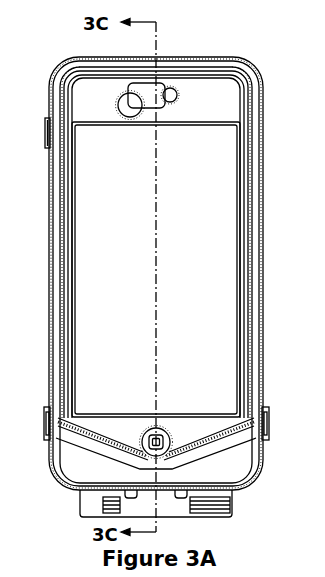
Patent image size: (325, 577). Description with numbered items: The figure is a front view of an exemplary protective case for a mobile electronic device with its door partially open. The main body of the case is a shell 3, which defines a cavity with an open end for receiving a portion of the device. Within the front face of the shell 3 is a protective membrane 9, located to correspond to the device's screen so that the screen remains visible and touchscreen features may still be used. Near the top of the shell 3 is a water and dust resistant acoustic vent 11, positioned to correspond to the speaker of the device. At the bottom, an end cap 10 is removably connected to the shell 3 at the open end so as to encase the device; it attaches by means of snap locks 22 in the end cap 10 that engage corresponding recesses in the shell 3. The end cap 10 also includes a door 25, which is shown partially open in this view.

The shell 3 is at (263, 218).
The protective membrane 9 is at (117, 216).
The end cap 10 is at (257, 478).
The acoustic vent 11 is at (122, 96).
The snap locks 22 is at (46, 432).
The door 25 is at (183, 513).